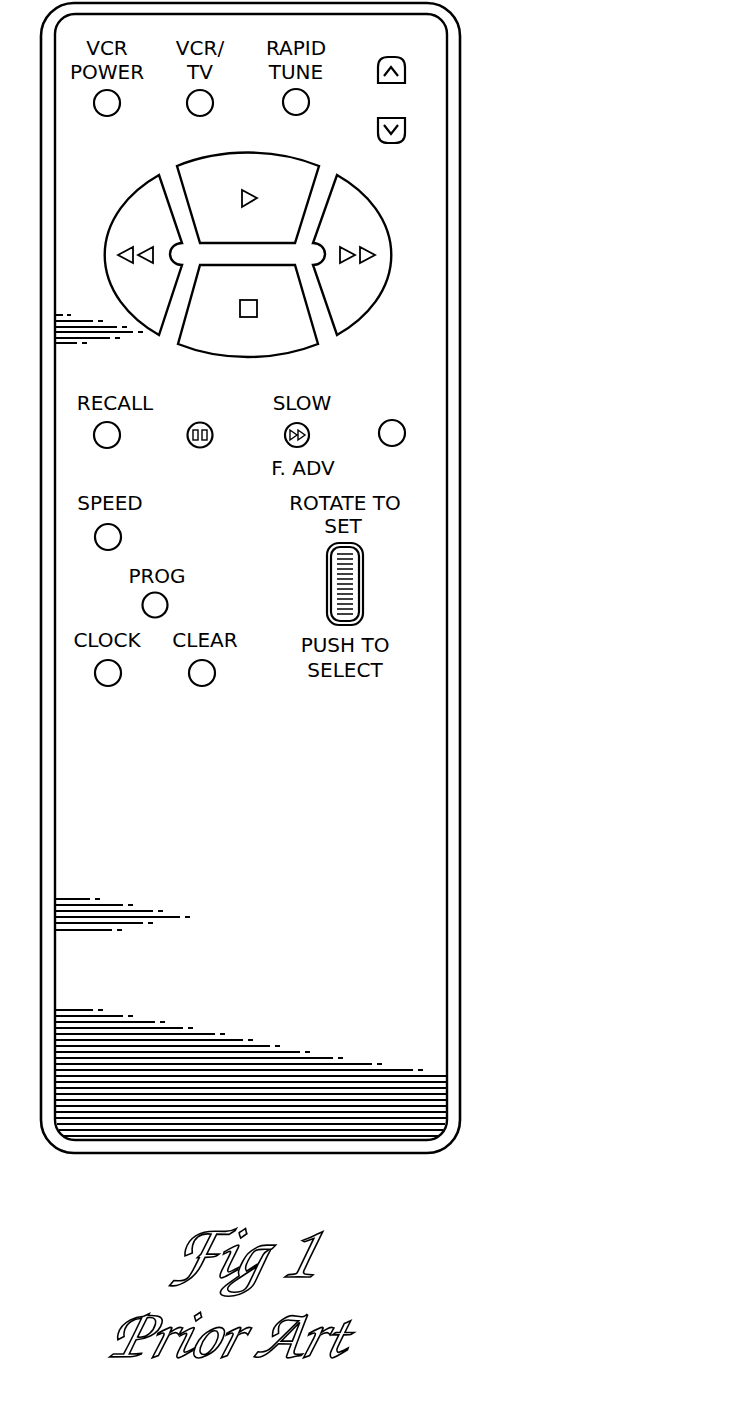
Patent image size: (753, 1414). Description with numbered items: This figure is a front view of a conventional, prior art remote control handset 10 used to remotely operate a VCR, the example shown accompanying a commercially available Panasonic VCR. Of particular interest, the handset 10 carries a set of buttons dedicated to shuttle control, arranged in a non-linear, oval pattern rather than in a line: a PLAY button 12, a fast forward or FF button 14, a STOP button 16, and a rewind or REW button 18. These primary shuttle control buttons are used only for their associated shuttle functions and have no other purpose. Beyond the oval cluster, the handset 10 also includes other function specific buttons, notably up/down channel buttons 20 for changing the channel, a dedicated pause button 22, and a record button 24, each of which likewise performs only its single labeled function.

The remote control handset 10 is at (503, 173).
The PLAY button 12 is at (283, 180).
The fast forward button 14 is at (357, 223).
The STOP button 16 is at (202, 322).
The rewind button 18 is at (135, 220).
The up/down channel buttons 20 is at (405, 128).
The pause button 22 is at (212, 437).
The record button 24 is at (393, 435).